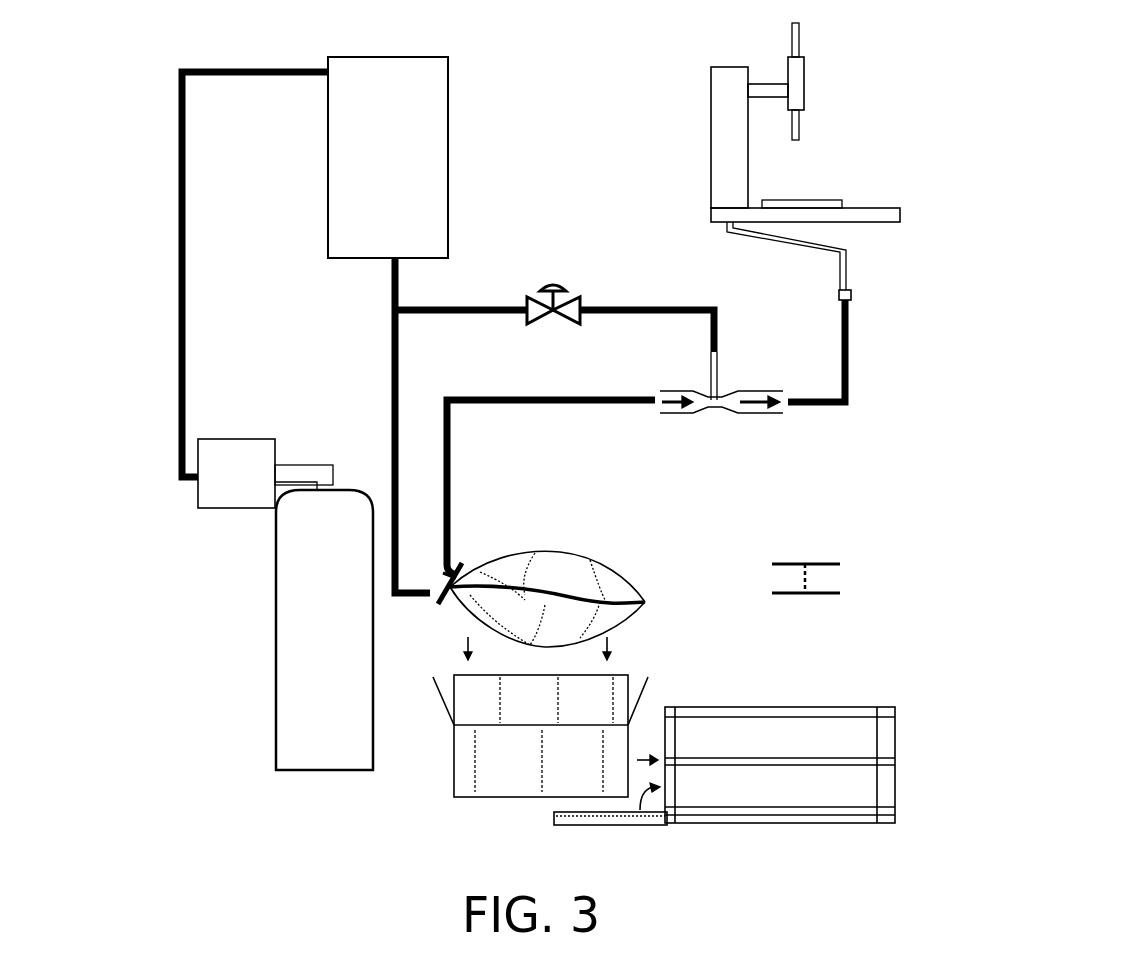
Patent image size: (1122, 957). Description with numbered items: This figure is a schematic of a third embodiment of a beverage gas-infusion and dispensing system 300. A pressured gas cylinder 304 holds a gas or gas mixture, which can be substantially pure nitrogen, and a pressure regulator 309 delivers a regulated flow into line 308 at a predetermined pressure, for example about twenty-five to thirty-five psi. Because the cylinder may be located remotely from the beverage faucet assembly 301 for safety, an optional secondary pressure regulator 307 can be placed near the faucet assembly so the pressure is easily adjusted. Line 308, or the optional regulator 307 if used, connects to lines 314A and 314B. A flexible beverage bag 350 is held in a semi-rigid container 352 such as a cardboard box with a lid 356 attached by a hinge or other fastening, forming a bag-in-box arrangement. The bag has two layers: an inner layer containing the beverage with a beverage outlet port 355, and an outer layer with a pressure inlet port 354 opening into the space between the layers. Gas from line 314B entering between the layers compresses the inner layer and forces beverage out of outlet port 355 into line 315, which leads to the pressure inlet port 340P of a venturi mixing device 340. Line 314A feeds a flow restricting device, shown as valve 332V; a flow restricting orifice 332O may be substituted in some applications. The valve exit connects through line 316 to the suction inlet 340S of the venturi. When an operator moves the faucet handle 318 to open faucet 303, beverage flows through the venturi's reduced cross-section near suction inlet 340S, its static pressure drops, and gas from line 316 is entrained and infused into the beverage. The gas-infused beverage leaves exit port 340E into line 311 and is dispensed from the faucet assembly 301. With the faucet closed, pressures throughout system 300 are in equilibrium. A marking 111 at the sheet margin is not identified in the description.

The beverage dispensing system 300 is at (553, 68).
The reference 111 is at (41, 393).
The beverage faucet assembly 301 is at (710, 118).
The faucet 303 is at (806, 93).
The faucet handle 318 is at (801, 31).
The optional secondary pressure regulator 307 is at (328, 158).
The line 308 is at (186, 240).
The pressure regulator 309 is at (257, 337).
The pressured gas cylinder 304 is at (275, 563).
The line 314A is at (420, 306).
The line 314B is at (399, 345).
The valve 332V is at (553, 284).
The line 316 is at (640, 306).
The line 315 is at (617, 395).
The venturi mixing device 340 is at (735, 425).
The suction inlet 340S is at (718, 360).
The pressure inlet port 340P is at (668, 412).
The exit port 340E is at (775, 412).
The line 311 is at (851, 308).
The flexible beverage bag 350 is at (553, 570).
The beverage outlet port 355 is at (456, 573).
The pressure inlet port 354 is at (771, 808).
The semi-rigid container 352 is at (465, 764).
The lid 356 is at (633, 819).
The flow restricting orifice 332O is at (806, 596).